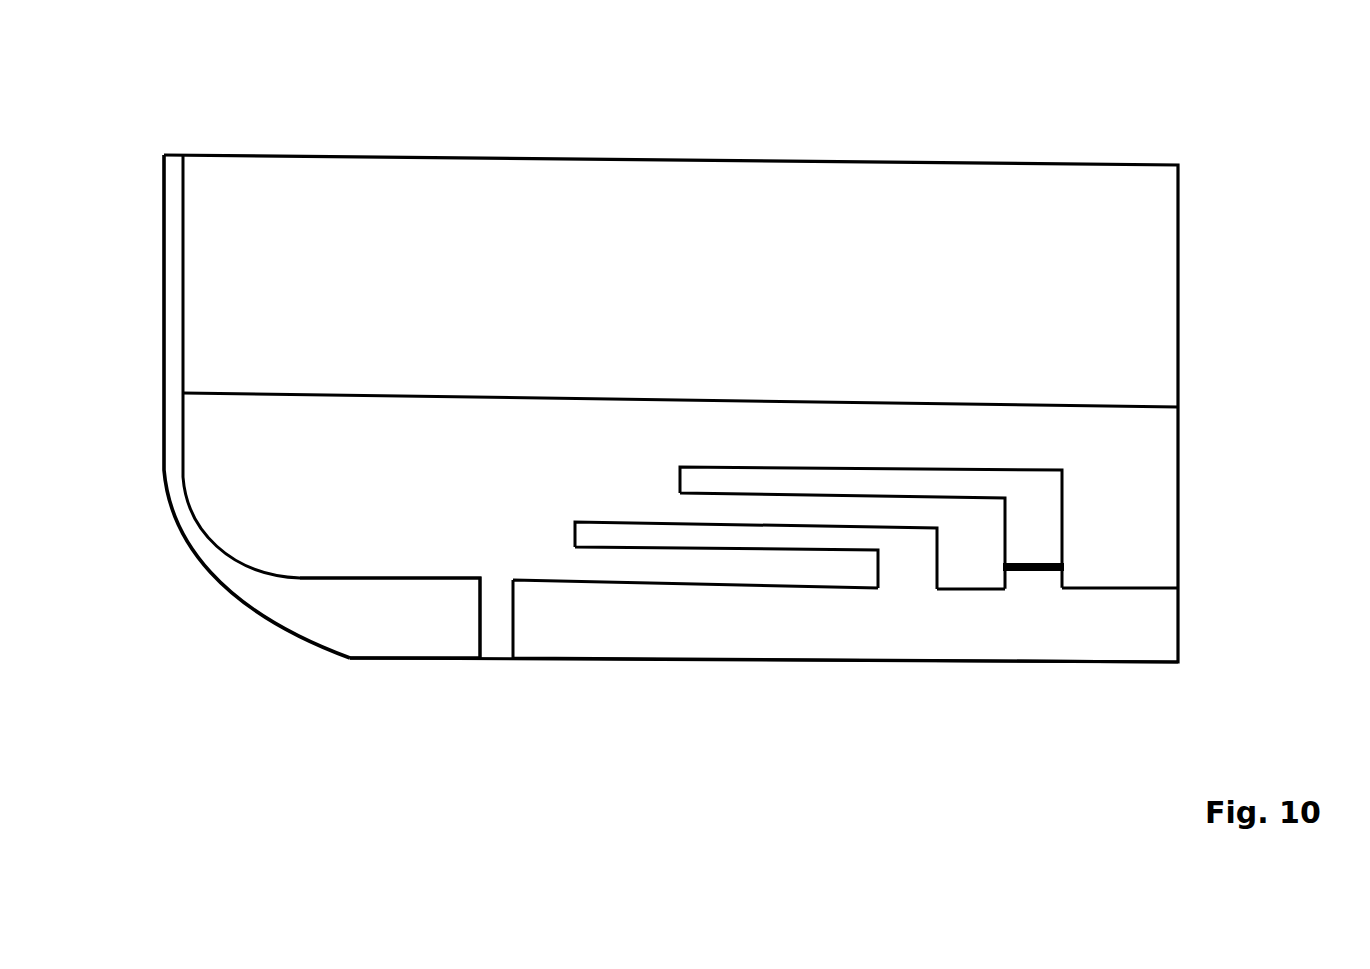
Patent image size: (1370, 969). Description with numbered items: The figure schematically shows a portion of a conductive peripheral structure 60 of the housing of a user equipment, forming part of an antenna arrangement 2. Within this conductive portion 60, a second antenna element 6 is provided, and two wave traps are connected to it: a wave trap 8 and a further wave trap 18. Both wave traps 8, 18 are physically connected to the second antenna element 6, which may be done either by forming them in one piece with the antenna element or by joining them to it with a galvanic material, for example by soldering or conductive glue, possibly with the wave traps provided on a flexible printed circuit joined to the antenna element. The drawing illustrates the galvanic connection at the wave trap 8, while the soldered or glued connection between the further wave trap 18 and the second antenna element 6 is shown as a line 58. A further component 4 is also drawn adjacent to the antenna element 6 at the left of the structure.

The antenna arrangement 2 is at (1268, 621).
The first body portion 4 is at (417, 608).
The second antenna element 6 is at (615, 622).
The wave trap 8 is at (703, 535).
The further wave trap 18 is at (768, 485).
The line 58 is at (1037, 560).
The conductive peripheral structure 60 is at (1010, 690).